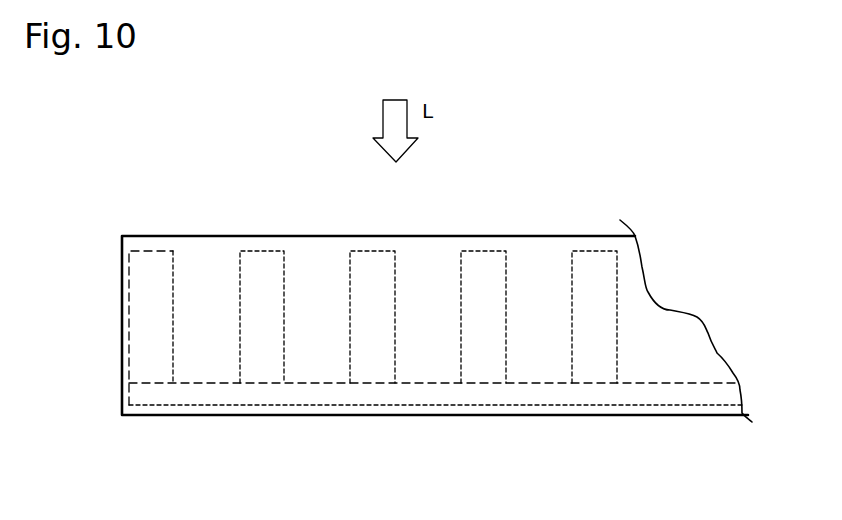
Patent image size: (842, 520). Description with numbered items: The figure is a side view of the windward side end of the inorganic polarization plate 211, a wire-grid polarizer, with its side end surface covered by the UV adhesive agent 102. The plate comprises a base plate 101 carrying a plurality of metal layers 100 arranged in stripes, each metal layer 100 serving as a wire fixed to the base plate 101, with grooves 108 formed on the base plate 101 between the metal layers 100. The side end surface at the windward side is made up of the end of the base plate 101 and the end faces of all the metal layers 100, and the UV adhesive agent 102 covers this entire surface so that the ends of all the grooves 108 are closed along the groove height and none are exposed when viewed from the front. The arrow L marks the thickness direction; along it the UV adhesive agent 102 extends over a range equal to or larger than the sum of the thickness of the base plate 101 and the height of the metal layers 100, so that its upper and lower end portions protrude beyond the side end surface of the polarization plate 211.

The metal layer 100 is at (388, 253).
The base plate 101 is at (367, 405).
The UV adhesive agent 102 is at (490, 236).
The groove 108 is at (199, 290).
The incident-side polarization plate 211 is at (716, 138).